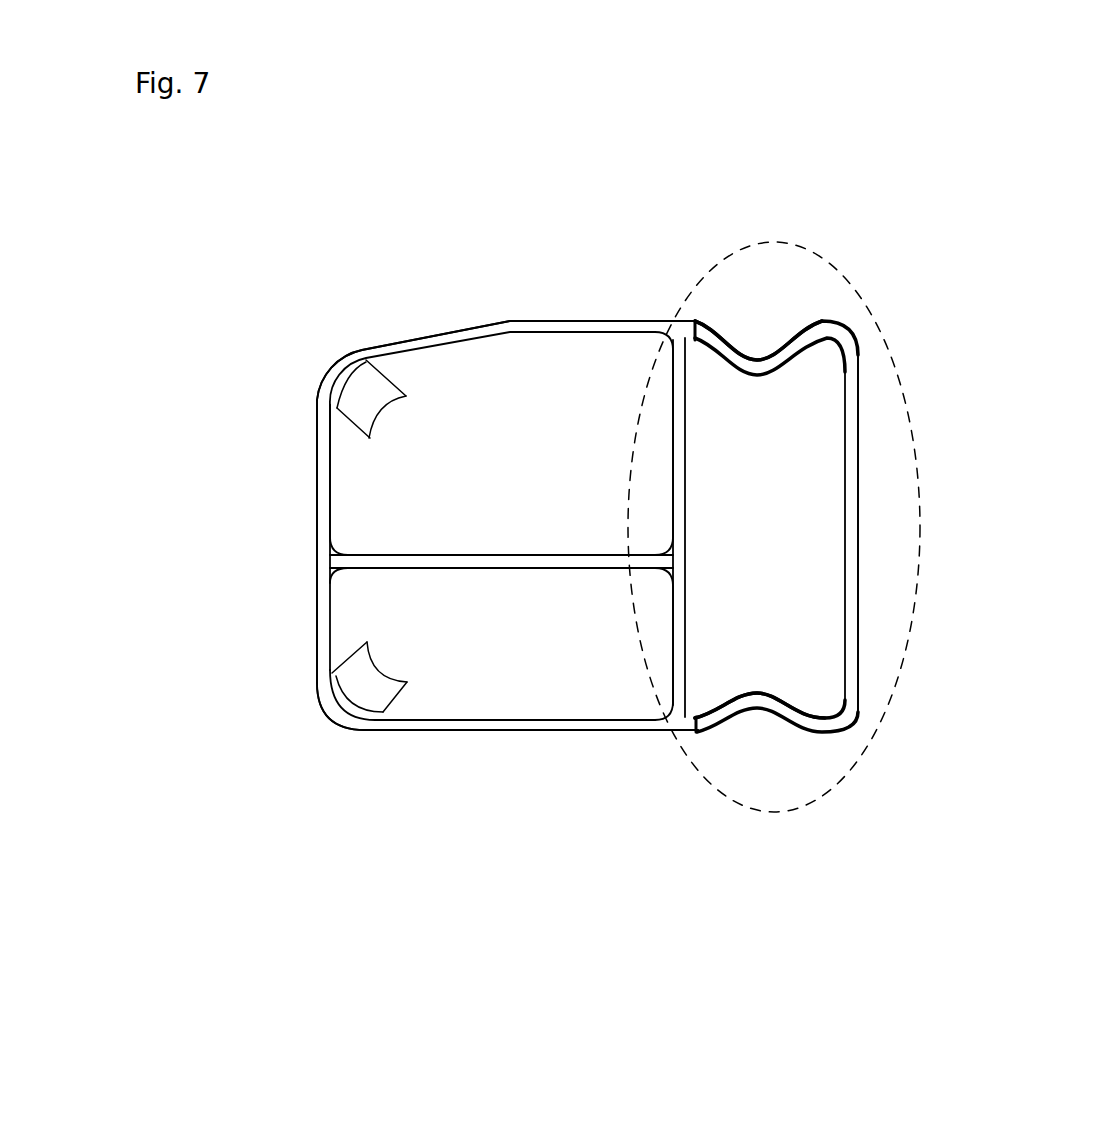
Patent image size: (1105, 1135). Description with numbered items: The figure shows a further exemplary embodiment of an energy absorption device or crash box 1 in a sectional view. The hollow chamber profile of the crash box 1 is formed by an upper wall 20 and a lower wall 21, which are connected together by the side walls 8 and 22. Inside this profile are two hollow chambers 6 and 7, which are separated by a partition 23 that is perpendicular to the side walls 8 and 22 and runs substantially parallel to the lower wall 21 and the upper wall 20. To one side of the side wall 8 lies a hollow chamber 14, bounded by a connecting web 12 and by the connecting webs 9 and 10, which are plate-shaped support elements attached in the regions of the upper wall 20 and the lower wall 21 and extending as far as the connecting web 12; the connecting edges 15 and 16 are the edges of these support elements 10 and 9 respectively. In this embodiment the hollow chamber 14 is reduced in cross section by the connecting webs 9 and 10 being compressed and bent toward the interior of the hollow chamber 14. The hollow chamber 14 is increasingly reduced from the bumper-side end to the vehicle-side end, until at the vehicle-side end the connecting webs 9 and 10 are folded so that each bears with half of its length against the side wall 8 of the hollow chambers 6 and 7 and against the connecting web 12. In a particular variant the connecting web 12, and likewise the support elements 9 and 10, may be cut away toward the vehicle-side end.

The crash box 1 is at (512, 176).
The hollow chamber 6 is at (482, 462).
The hollow chamber 7 is at (400, 605).
The side wall 8 is at (680, 477).
The connecting web 9 is at (760, 705).
The connecting web 10 is at (758, 340).
The connecting web 12 is at (850, 502).
The hollow chamber 14 is at (782, 383).
The connecting edge 15 is at (755, 362).
The connecting edge 16 is at (757, 711).
The upper wall 20 is at (478, 322).
The lower wall 21 is at (532, 727).
The side wall 22 is at (317, 482).
The partition 23 is at (472, 533).